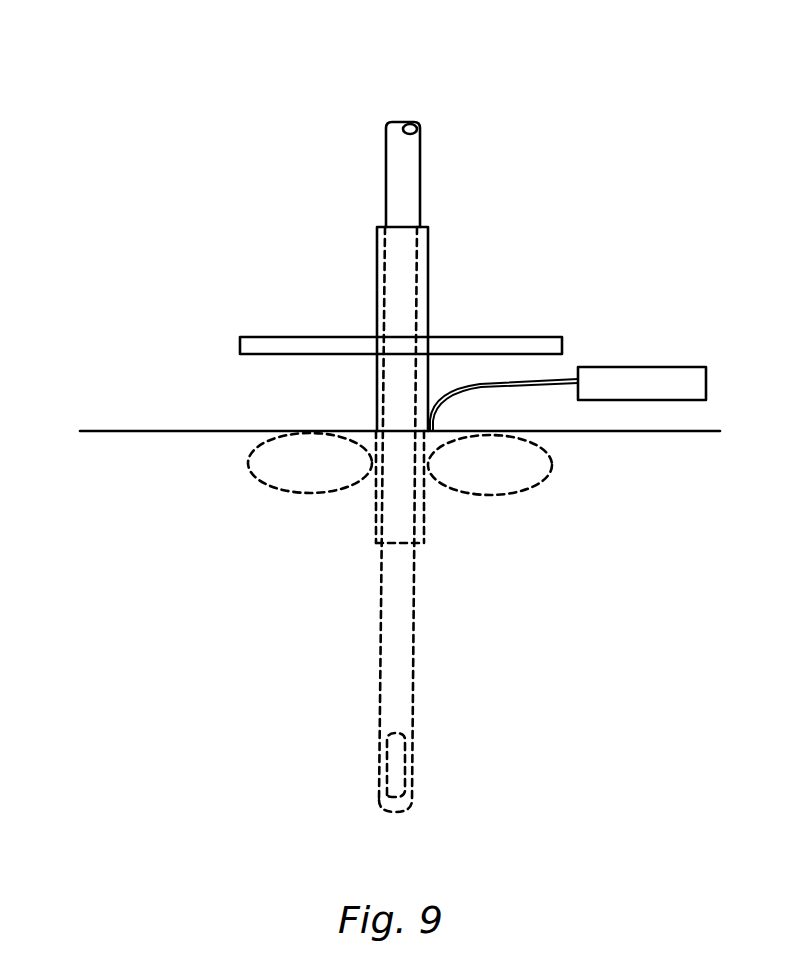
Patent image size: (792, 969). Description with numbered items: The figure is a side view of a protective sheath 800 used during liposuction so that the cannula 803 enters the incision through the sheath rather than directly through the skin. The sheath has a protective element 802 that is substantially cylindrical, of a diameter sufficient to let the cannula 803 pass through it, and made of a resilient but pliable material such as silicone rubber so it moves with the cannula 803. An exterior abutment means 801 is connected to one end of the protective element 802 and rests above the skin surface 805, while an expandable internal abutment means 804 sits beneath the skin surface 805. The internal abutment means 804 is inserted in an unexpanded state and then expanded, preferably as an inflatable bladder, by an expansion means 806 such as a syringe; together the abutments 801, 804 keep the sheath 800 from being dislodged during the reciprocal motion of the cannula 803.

The protective sheath 800 is at (358, 280).
The exterior abutment means 801 is at (472, 346).
The protective element 802 is at (428, 291).
The cannula 803 is at (410, 167).
The expandable internal abutment means 804 is at (517, 477).
The skin surface 805 is at (150, 431).
The expansion means 806 is at (640, 376).